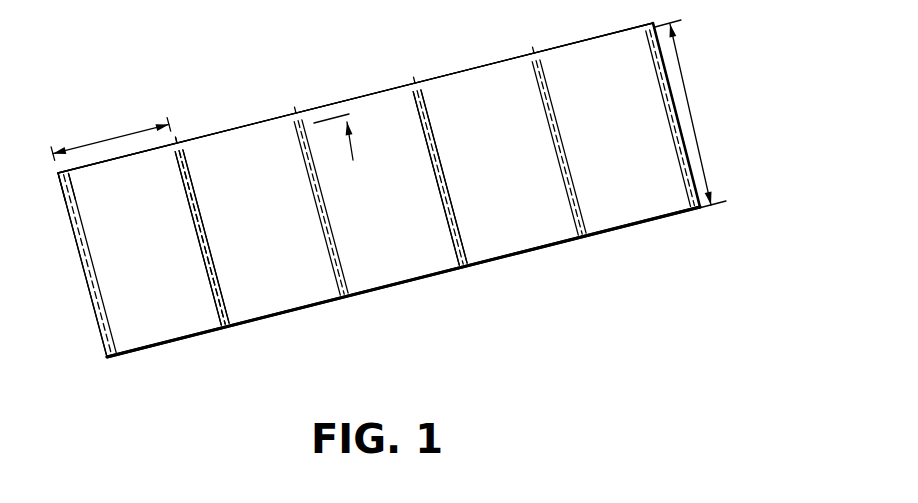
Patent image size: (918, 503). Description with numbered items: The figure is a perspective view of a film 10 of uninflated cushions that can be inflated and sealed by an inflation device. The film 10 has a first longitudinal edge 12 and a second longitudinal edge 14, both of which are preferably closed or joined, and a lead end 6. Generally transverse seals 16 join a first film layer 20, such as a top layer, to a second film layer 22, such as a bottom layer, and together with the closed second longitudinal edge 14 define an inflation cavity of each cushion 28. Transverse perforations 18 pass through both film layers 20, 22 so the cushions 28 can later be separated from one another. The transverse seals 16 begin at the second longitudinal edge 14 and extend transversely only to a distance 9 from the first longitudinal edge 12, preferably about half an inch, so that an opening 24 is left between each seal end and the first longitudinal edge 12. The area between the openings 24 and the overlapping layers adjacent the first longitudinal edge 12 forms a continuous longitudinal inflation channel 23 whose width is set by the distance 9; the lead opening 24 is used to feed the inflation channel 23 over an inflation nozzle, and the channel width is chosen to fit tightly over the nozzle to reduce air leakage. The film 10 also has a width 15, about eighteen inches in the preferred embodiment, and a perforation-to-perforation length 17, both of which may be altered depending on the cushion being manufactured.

The film 10 is at (594, 267).
The first longitudinal edge 12 is at (340, 102).
The inflation channel 23 is at (222, 131).
The second longitudinal edge 14 is at (272, 316).
The cushion 28 is at (157, 321).
The lead end 6 is at (83, 277).
The opening 24 is at (57, 186).
The transverse seal 16 is at (220, 308).
The perforation 18 is at (185, 150).
The first film layer 20 is at (474, 86).
The second film layer 22 is at (508, 228).
The perforation-to-perforation length 17 is at (115, 139).
The width 15 is at (690, 115).
The distance 9 is at (354, 158).